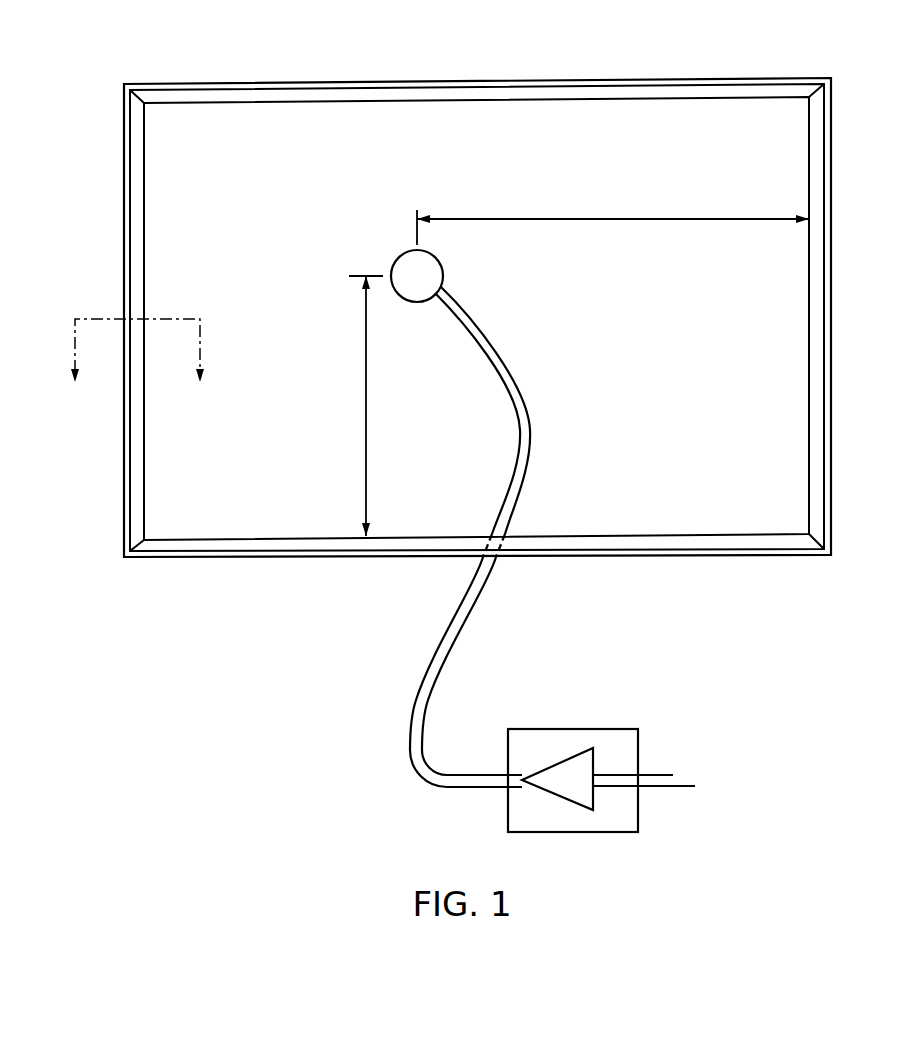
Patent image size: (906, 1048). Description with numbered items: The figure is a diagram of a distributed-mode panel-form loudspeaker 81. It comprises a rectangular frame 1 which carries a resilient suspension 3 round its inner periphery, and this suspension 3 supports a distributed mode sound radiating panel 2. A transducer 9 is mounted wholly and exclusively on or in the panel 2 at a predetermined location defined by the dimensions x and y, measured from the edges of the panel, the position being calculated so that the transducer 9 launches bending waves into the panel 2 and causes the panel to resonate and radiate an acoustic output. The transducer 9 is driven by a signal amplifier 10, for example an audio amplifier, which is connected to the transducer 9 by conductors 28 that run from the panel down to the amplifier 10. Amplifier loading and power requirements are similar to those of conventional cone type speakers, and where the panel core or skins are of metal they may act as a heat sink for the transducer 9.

The rectangular frame 1 is at (272, 83).
The distributed mode sound radiating panel 2 is at (632, 123).
The resilient suspension 3 is at (681, 548).
The transducer 9 is at (410, 268).
The signal amplifier 10 is at (612, 742).
The conductors 28 is at (440, 668).
The panel-form loudspeaker 81 is at (446, 66).